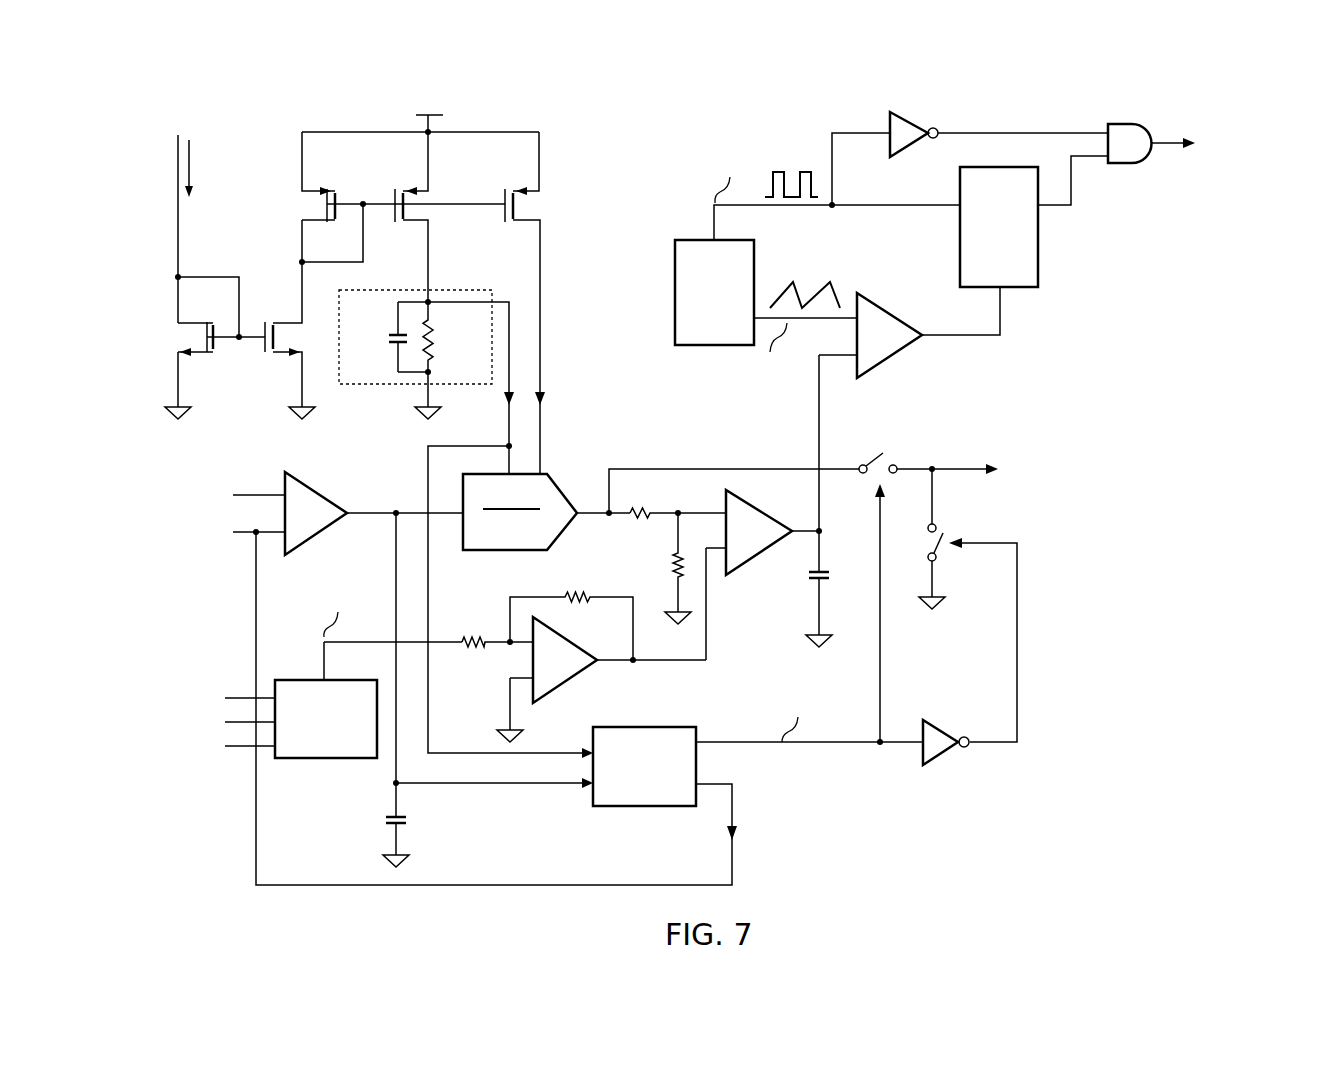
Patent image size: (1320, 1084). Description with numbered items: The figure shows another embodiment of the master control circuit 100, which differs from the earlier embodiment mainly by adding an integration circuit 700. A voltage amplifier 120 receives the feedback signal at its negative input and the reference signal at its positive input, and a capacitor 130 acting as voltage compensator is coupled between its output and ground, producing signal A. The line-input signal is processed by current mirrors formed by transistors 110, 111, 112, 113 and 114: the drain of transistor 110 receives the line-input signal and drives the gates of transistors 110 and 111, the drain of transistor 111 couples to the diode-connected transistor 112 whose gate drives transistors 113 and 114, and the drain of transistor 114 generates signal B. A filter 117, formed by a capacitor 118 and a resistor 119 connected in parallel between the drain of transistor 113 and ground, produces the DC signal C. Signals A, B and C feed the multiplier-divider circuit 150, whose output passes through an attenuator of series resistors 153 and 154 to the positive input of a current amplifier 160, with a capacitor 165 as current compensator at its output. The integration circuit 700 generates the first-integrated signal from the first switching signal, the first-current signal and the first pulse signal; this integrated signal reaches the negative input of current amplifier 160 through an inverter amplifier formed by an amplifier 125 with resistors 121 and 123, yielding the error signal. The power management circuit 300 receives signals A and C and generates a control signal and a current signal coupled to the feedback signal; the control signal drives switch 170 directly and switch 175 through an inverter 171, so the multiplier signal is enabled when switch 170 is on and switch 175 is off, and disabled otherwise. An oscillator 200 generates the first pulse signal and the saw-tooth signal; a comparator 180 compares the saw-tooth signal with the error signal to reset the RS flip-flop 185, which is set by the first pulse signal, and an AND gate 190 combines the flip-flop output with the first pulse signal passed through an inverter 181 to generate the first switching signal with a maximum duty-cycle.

The master control circuit 100 is at (1256, 88).
The transistor 110 is at (194, 357).
The transistor 111 is at (290, 340).
The transistor 112 is at (402, 198).
The transistor 113 is at (404, 217).
The transistor 114 is at (521, 303).
The filter 117 is at (460, 290).
The capacitor 118 is at (378, 337).
The resistor 119 is at (454, 337).
The voltage amplifier 120 is at (348, 511).
The resistor 121 is at (495, 627).
The resistor 123 is at (571, 612).
The amplifier 125 is at (601, 679).
The capacitor 130 is at (376, 838).
The multiplier-divider circuit 150 is at (544, 500).
The resistor 153 is at (675, 498).
The resistor 154 is at (662, 568).
The current amplifier 160 is at (762, 574).
The capacitor 165 is at (840, 501).
The switch 170 is at (923, 585).
The inverter 171 is at (951, 735).
The switch 175 is at (968, 605).
The comparator 180 is at (909, 332).
The inverter 181 is at (999, 127).
The RS flip-flop 185 is at (1034, 215).
The AND gate 190 is at (1151, 130).
The oscillator 200 is at (795, 239).
The power management circuit 300 is at (758, 752).
The integration circuit 700 is at (301, 704).